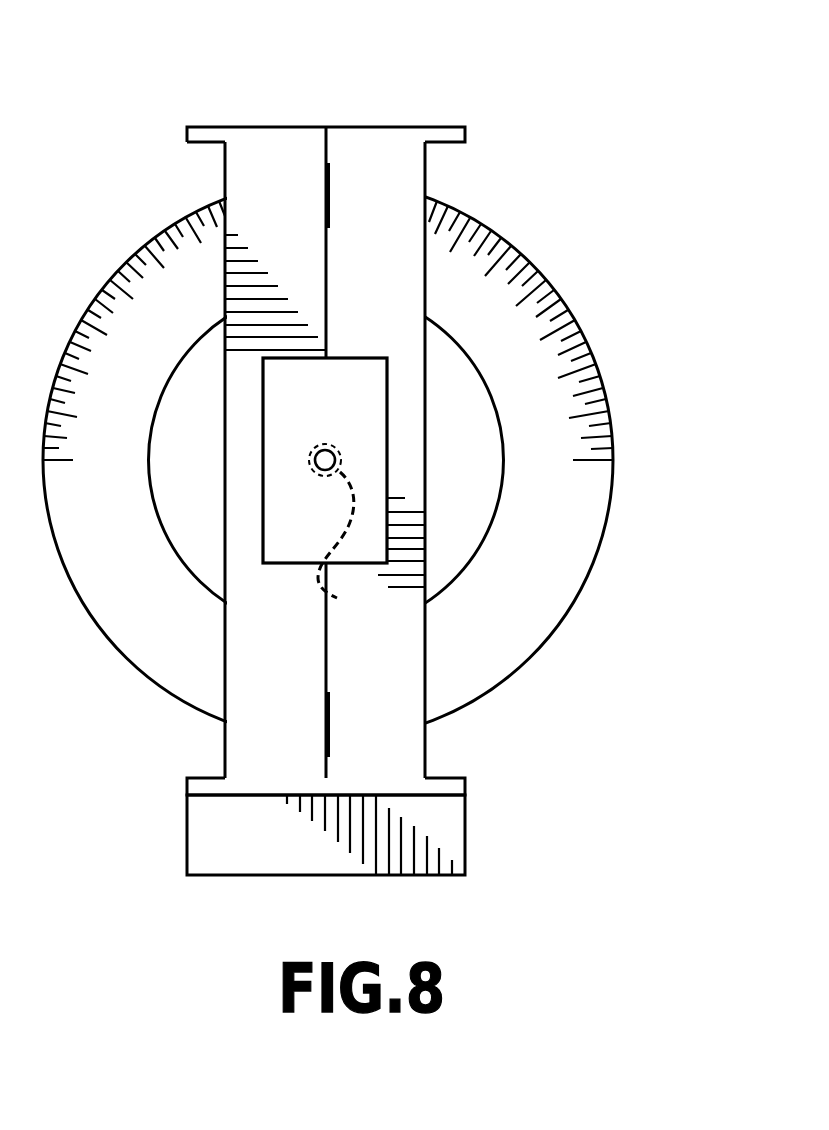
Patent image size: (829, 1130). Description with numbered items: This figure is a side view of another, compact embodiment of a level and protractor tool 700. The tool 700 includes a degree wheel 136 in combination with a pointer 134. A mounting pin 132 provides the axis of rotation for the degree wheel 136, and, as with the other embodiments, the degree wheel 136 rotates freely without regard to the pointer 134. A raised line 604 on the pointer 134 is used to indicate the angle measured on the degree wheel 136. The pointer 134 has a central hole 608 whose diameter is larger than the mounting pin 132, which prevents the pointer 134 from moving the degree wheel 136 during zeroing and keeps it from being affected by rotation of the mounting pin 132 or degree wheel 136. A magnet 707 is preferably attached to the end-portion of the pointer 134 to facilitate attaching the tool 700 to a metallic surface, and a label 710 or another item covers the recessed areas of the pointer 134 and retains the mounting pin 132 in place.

The level and protractor tool 700 is at (394, 438).
The pointer 134 is at (357, 126).
The degree wheel 136 is at (523, 257).
The raised line 604 is at (325, 190).
The label 710 is at (343, 357).
The mounting pin 132 is at (325, 460).
The central hole 608 is at (359, 554).
The magnet 707 is at (466, 832).